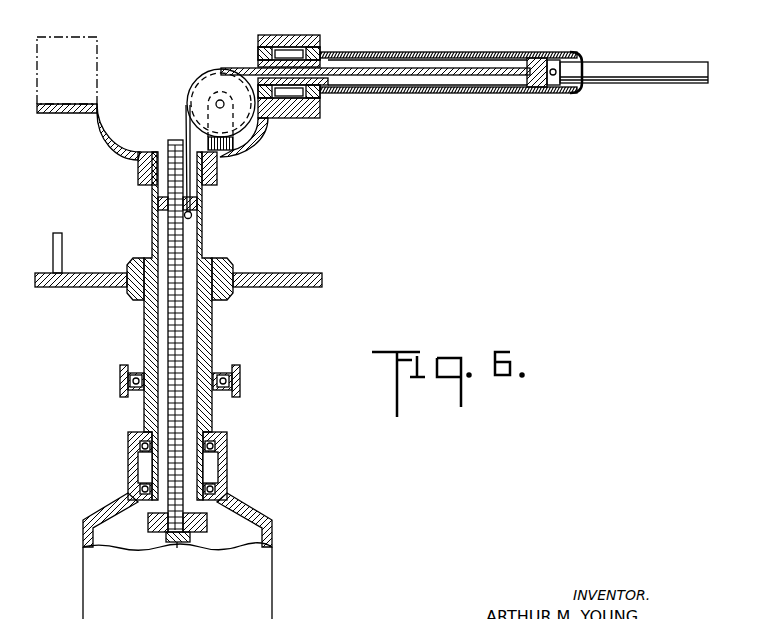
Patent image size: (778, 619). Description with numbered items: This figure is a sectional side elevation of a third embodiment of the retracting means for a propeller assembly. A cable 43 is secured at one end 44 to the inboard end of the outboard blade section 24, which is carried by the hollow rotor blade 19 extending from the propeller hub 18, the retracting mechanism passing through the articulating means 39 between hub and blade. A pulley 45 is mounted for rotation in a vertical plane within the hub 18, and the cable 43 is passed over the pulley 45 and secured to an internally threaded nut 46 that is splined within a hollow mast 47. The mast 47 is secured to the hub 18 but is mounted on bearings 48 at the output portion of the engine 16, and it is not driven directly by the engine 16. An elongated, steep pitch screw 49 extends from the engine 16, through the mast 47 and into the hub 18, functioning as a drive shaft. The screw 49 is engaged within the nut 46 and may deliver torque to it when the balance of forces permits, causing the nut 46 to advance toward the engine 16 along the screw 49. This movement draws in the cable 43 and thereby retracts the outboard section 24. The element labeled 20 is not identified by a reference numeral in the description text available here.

The engine 16 is at (262, 582).
The propeller hub 18 is at (266, 141).
The rotor blade 19 is at (468, 26).
The arm 20 is at (393, 53).
The outboard blade section 24 is at (638, 62).
The articulating means 39 is at (321, 40).
The cable 43 is at (484, 68).
The cable end 44 is at (556, 60).
The pulley 45 is at (215, 78).
The internally threaded nut 46 is at (196, 206).
The hollow mast 47 is at (204, 239).
The bearings 48 is at (228, 439).
The steep pitch screw 49 is at (158, 203).